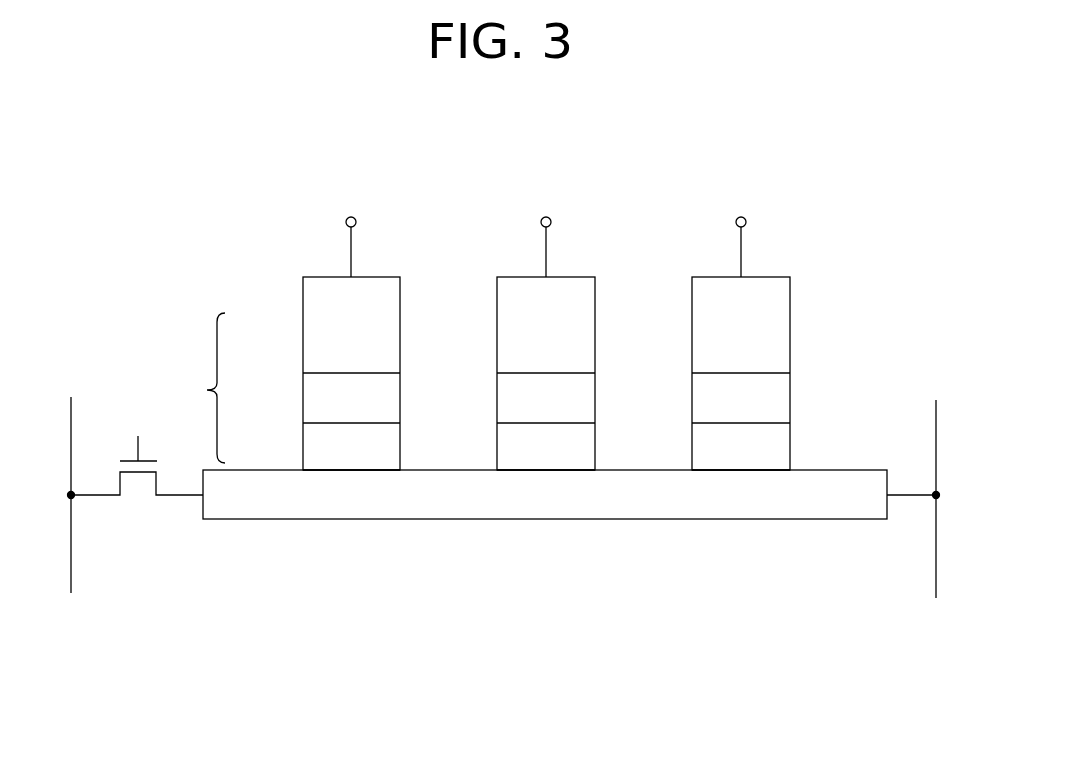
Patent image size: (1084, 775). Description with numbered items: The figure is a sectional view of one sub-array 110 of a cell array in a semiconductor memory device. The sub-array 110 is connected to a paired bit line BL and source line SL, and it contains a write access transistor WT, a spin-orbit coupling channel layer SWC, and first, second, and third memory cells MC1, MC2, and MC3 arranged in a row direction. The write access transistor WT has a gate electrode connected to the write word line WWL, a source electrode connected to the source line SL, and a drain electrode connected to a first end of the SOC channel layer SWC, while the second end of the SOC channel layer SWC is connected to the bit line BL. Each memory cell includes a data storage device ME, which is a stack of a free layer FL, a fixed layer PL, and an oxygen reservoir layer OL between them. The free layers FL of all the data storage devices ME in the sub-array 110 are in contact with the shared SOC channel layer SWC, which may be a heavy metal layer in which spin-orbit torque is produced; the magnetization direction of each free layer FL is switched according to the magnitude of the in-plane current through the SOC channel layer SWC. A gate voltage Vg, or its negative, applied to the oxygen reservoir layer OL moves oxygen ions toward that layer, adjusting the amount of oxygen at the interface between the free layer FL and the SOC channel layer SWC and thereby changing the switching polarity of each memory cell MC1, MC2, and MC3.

The sub-array 110 is at (897, 141).
The source line SL is at (71, 481).
The bit line BL is at (917, 483).
The write access transistor WT is at (140, 486).
The write word line WWL is at (136, 434).
The spin-orbit coupling (SOC) channel layer SWC is at (545, 512).
The first memory cell MC1 is at (376, 270).
The second memory cell MC2 is at (571, 270).
The third memory cell MC3 is at (766, 270).
The gate voltage Vg is at (545, 230).
The fixed layer PL is at (312, 323).
The oxygen reservoir layer OL is at (312, 398).
The free layer FL is at (312, 447).
The data storage device ME is at (200, 388).